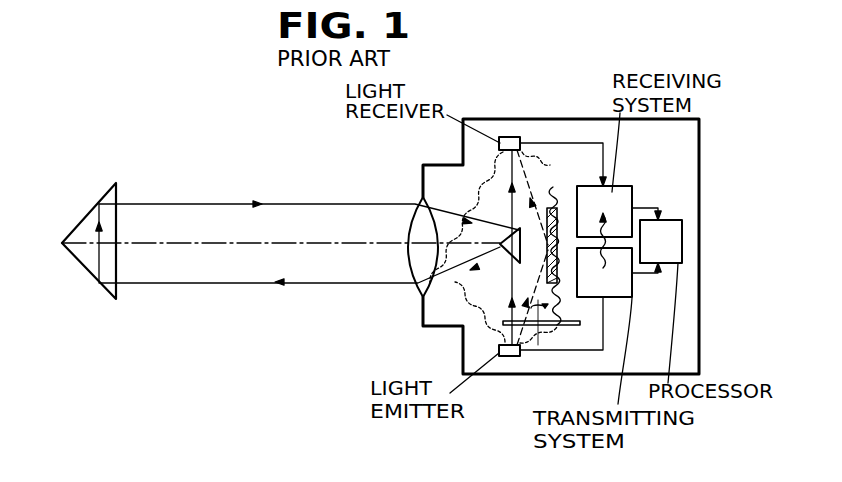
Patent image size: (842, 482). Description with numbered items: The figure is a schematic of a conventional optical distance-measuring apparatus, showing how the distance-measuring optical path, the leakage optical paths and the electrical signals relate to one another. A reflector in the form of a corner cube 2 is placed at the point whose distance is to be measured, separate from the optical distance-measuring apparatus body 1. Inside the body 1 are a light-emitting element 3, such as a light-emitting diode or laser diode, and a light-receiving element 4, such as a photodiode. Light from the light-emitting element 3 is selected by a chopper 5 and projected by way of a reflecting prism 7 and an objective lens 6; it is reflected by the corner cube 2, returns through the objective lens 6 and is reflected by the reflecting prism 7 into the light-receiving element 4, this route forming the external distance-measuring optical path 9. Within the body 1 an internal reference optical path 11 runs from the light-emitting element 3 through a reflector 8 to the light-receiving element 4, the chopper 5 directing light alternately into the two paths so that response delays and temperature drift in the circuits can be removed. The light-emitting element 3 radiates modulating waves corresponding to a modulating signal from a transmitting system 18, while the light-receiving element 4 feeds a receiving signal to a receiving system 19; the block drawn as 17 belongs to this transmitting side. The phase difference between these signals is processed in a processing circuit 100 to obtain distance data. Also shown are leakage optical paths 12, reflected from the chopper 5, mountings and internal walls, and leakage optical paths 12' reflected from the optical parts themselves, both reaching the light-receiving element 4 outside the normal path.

The optical distance-measuring apparatus body 1 is at (545, 118).
The corner cube 2 is at (118, 200).
The light-emitting element 3 is at (508, 357).
The light-receiving element 4 is at (508, 137).
The chopper 5 is at (582, 320).
The objective lens 6 is at (415, 268).
The reflecting prism 7 is at (510, 252).
The reflector 8 is at (549, 195).
The external distance-measuring optical path 9 is at (310, 204).
The internal reference optical path 11 is at (533, 212).
The leakage optical paths 12 is at (516, 187).
The leakage optical paths 12' is at (458, 323).
The transmitting system 17 is at (619, 272).
The transmitting system 18 is at (632, 290).
The receiving system 19 is at (613, 192).
The processing circuit 100 is at (682, 233).